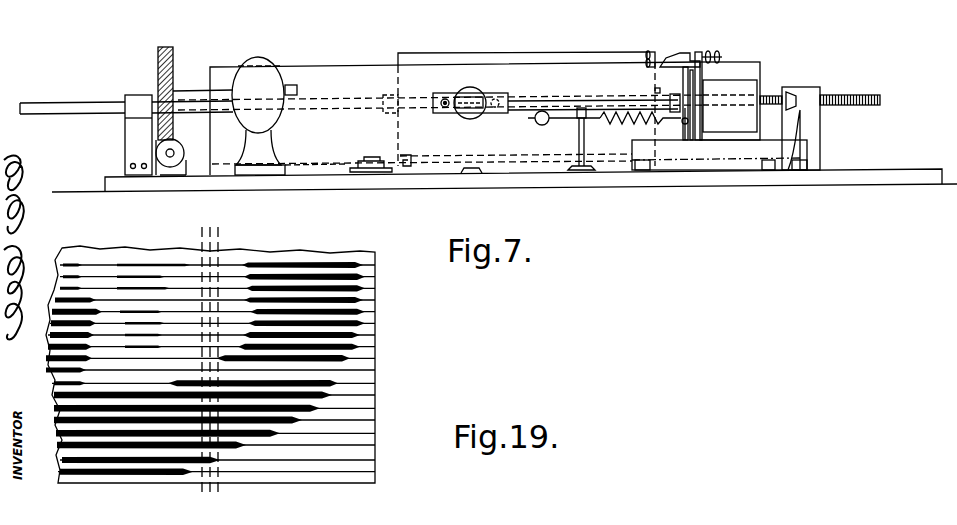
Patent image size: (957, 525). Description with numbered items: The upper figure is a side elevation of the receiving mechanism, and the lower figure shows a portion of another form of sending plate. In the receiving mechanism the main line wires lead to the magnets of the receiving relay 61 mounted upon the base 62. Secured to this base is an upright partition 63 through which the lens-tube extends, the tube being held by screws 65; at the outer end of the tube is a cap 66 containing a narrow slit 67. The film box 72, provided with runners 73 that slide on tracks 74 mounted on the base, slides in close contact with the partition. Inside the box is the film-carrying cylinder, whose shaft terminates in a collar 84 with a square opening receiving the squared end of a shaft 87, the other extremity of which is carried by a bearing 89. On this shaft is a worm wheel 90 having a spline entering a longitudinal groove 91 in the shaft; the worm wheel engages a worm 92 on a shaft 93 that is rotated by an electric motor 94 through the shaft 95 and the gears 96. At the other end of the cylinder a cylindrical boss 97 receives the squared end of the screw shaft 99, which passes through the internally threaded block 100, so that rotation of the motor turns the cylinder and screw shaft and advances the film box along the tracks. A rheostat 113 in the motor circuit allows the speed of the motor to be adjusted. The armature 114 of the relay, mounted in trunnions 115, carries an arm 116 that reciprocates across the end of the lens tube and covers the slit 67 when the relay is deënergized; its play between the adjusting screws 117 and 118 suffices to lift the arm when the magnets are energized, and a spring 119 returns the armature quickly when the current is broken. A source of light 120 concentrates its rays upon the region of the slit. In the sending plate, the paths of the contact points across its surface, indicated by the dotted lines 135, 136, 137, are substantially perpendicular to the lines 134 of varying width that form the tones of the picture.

In FIG. 7, the receiving relay 61 is at (730, 101).
In FIG. 7, the base 62 is at (352, 188).
In FIG. 7, the upright partition 63 is at (455, 118).
In FIG. 7, the screws 65 is at (444, 99).
In FIG. 7, the cap 66 is at (470, 87).
In FIG. 7, the narrow slit 67 is at (468, 110).
In FIG. 7, the film box 72 is at (543, 52).
In FIG. 7, the runners 73 is at (413, 152).
In FIG. 7, the tracks 74 is at (345, 165).
In FIG. 7, the collar 84 is at (392, 95).
In FIG. 7, the shaft 87 is at (98, 106).
In FIG. 7, the bearing 89 is at (138, 135).
In FIG. 7, the worm wheel 90 is at (158, 62).
In FIG. 7, the longitudinal groove 91 is at (60, 104).
In FIG. 7, the worm 92 is at (178, 142).
In FIG. 7, the shaft 93 is at (175, 153).
In FIG. 7, the electric motor 94 is at (264, 116).
In FIG. 7, the shaft 95 is at (196, 91).
In FIG. 7, the gears 96 is at (172, 58).
In FIG. 7, the cylindrical boss 97 is at (655, 89).
In FIG. 7, the screw shaft 99 is at (858, 95).
In FIG. 7, the internally threaded block 100 is at (806, 87).
In FIG. 7, the rheostat 113 is at (372, 160).
In FIG. 7, the armature 114 is at (688, 52).
In FIG. 7, the trunnions 115 is at (719, 155).
In FIG. 7, the arm 116 is at (538, 101).
In FIG. 7, the adjusting screw 117 is at (714, 51).
In FIG. 7, the adjusting screw 118 is at (651, 50).
In FIG. 7, the spring 119 is at (604, 124).
In FIG. 7, the source of light 120 is at (474, 173).
In FIG. 19, the lines of varying width 134 is at (340, 277).
In FIG. 19, the dotted line 135 is at (200, 243).
In FIG. 19, the dotted line 136 is at (212, 240).
In FIG. 19, the dotted line 137 is at (220, 248).